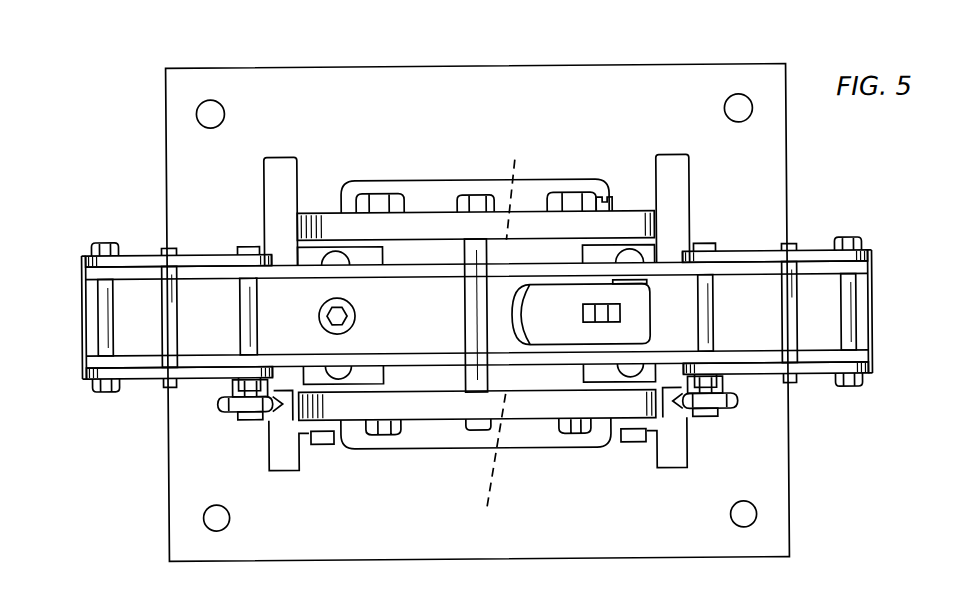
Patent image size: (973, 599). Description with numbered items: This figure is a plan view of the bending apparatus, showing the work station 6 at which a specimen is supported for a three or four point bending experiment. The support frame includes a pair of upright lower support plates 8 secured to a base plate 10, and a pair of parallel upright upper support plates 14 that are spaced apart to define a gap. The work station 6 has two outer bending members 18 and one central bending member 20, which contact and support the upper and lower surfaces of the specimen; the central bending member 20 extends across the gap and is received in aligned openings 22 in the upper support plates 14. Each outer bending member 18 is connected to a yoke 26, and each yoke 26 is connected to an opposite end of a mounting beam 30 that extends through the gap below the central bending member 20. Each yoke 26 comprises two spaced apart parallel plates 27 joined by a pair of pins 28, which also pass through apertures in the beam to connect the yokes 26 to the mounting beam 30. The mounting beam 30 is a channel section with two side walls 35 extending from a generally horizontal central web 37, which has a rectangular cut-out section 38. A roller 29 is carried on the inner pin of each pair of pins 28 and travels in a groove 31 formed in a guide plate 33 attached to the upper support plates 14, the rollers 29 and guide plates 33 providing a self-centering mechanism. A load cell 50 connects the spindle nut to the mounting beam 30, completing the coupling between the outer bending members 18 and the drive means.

The work station 6 is at (160, 64).
The lower support plates 8 is at (278, 182).
The base plate 10 is at (550, 95).
The upper support plates 14 is at (428, 216).
The outer bending members 18 is at (165, 308).
The central bending member 20 is at (518, 378).
The aligned openings 22 is at (504, 332).
The yoke 26 is at (68, 238).
The plates 27 is at (135, 260).
The pins 28 is at (243, 288).
The roller 29 is at (247, 412).
The mounting beam 30 is at (212, 333).
The grooves 31 is at (278, 407).
The guide plates 33 is at (337, 430).
The side walls 35 is at (865, 269).
The central web 37 is at (80, 296).
The rectangular cut-out section 38 is at (632, 322).
The load cell 50 is at (515, 308).